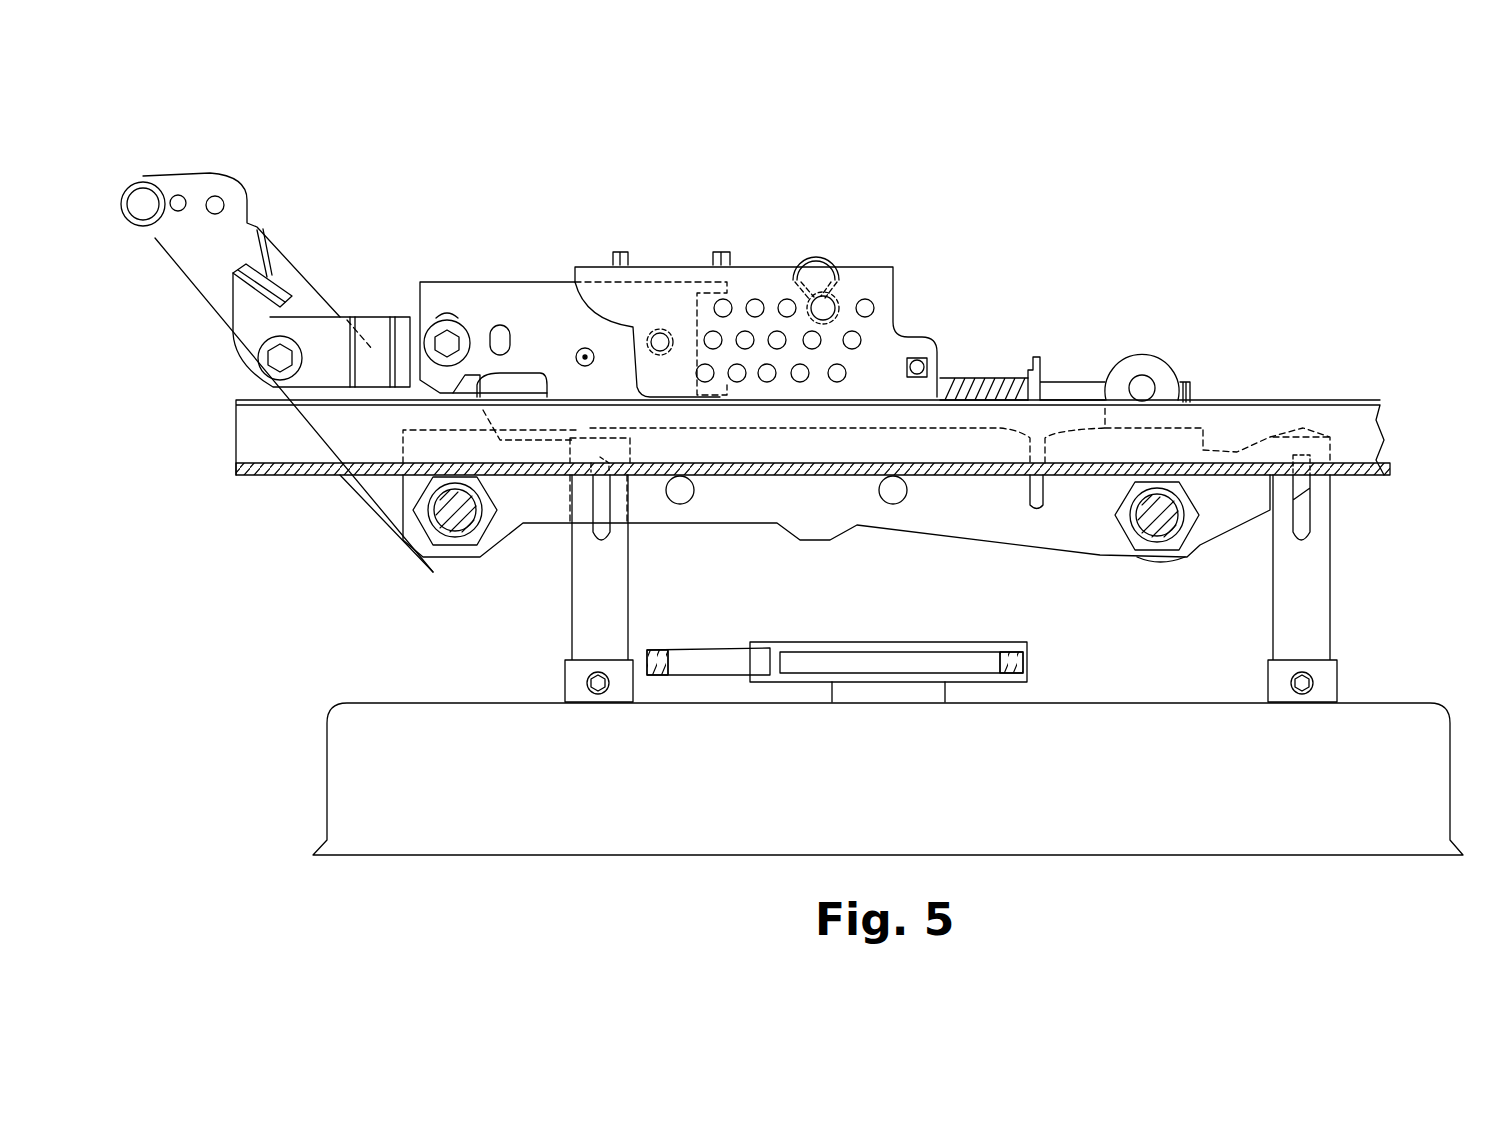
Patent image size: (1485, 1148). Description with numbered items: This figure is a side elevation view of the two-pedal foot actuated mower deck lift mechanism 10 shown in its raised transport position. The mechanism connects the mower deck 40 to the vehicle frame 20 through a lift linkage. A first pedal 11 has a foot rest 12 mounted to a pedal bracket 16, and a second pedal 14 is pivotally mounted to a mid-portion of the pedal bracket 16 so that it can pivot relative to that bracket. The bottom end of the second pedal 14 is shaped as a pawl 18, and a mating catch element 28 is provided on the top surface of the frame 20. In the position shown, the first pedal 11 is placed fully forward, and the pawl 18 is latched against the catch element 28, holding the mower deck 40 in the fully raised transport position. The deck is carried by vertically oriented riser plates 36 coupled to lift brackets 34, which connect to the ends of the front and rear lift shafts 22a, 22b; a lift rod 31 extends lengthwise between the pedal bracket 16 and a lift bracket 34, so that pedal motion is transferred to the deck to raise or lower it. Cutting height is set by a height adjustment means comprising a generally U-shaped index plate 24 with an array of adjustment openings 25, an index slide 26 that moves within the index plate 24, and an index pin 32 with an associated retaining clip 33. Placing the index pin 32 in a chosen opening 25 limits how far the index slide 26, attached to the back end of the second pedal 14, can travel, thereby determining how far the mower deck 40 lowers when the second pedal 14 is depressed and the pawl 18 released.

The deck lift mechanism 10 is at (385, 135).
The first pedal 11 is at (180, 162).
The foot rest 12 is at (143, 212).
The second pedal 14 is at (257, 310).
The pedal bracket 16 is at (387, 488).
The pawl 18 is at (465, 387).
The vehicle frame 20 is at (1300, 400).
The front lift shaft 22a is at (457, 513).
The rear lift shaft 22b is at (1157, 517).
The index plate 24 is at (763, 277).
The adjustment openings 25 is at (852, 340).
The index slide 26 is at (455, 290).
The catch element 28 is at (495, 388).
The lift rod 31 is at (665, 332).
The index pin 32 is at (833, 307).
The retaining clip 33 is at (823, 247).
The lift bracket 34 is at (1160, 370).
The riser plate 36 is at (607, 607).
The mower deck 40 is at (1433, 710).